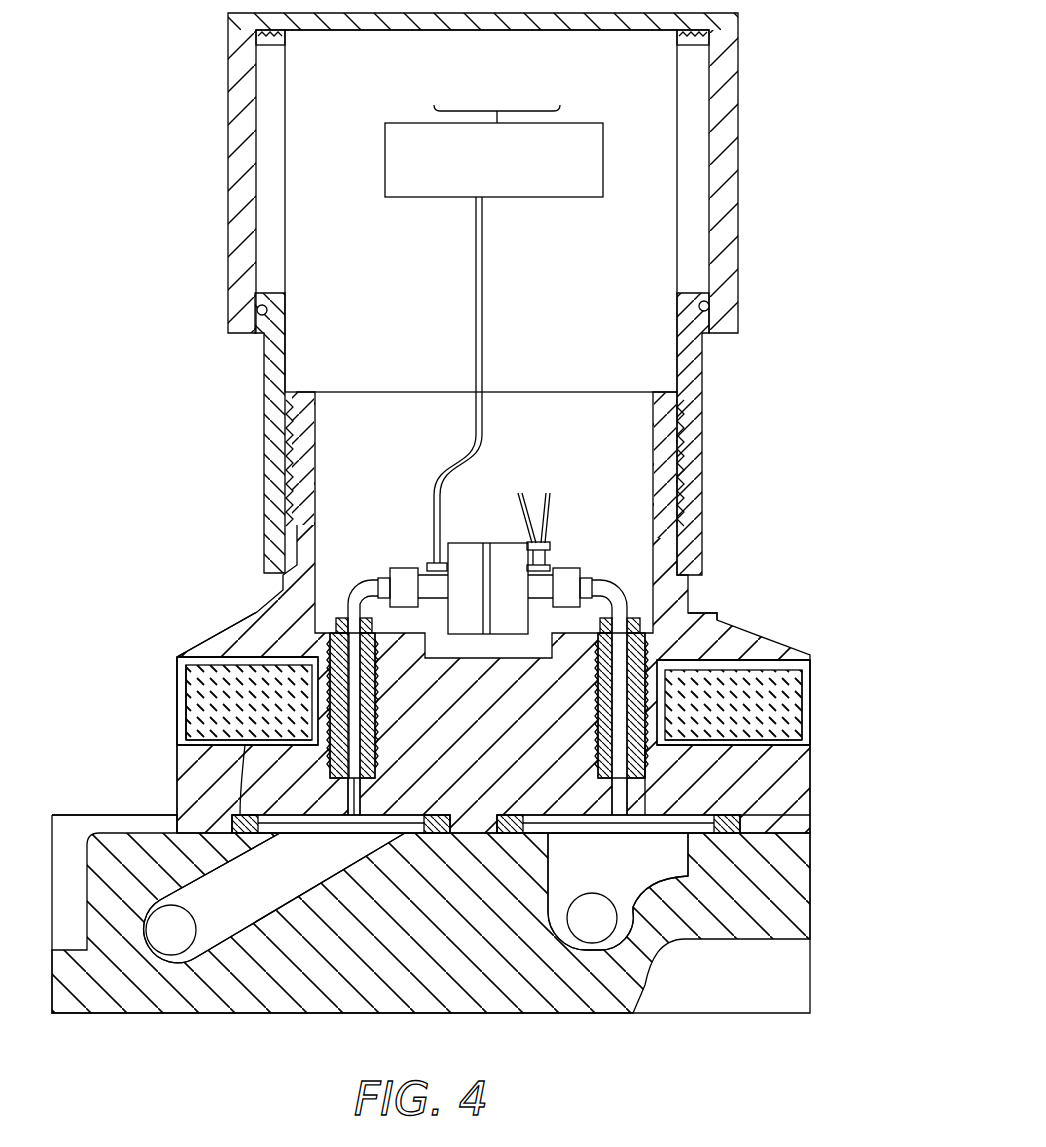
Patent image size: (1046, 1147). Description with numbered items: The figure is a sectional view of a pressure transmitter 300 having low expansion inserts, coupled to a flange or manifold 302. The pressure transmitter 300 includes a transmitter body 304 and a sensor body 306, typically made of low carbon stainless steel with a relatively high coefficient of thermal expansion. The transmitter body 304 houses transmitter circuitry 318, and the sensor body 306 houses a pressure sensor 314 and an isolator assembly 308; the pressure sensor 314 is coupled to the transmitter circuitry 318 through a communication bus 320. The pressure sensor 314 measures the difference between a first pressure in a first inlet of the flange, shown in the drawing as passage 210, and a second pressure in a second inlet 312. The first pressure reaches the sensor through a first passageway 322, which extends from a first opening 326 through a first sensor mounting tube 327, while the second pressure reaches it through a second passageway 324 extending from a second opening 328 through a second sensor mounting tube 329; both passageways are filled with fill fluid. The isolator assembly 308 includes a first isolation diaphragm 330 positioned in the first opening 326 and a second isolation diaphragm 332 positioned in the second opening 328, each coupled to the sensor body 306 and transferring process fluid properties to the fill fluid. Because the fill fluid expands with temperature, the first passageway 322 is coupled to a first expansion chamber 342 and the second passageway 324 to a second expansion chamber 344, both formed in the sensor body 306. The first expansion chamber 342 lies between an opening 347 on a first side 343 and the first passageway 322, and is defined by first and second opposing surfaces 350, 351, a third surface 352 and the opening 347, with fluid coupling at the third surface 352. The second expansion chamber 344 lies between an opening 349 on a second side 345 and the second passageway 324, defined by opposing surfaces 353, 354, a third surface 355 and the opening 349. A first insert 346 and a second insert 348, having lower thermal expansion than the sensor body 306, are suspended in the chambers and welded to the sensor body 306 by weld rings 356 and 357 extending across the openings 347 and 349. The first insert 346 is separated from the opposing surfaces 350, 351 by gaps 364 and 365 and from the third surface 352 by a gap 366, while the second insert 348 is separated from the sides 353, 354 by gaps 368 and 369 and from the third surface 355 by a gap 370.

The pressure transmitter 300 is at (748, 200).
The flange or manifold 302 is at (75, 820).
The transmitter body 304 is at (738, 115).
The sensor body 306 is at (695, 660).
The isolator assembly 308 is at (752, 853).
The first pressure passageway 210 is at (274, 898).
The second inlet 312 is at (618, 891).
The pressure sensor 314 is at (460, 552).
The transmitter circuitry 318 is at (603, 143).
The communication bus 320 is at (483, 273).
The first passageway 322 is at (365, 715).
The second passageway 324 is at (608, 714).
The first opening 326 is at (333, 822).
The first sensor mounting tube 327 is at (367, 585).
The second opening 328 is at (608, 823).
The second sensor mounting tube 329 is at (593, 580).
The first isolation diaphragm 330 is at (320, 815).
The second isolation diaphragm 332 is at (765, 754).
The first expansion chamber 342 is at (215, 758).
The first side 343 is at (190, 742).
The second expansion chamber 344 is at (790, 748).
The second side 345 is at (810, 805).
The first insert 346 is at (230, 715).
The opening 347 is at (186, 700).
The second insert 348 is at (765, 707).
The opening 349 is at (812, 700).
The first opposing surface 350 is at (212, 702).
The second opposing surface 351 is at (235, 780).
The third surface 352 is at (262, 648).
The first opposing surface 353 is at (764, 705).
The second opposing surface 354 is at (703, 744).
The third surface 355 is at (690, 625).
The weld ring 356 is at (180, 672).
The weld ring 357 is at (812, 666).
The gap 364 is at (200, 662).
The gap 365 is at (257, 755).
The gap 366 is at (353, 772).
The gap 368 is at (762, 667).
The gap 369 is at (728, 746).
The gap 370 is at (645, 748).